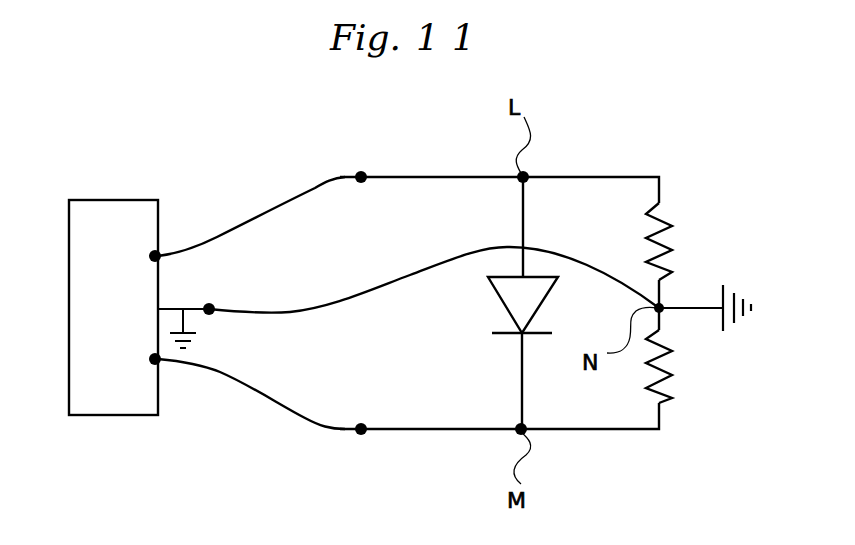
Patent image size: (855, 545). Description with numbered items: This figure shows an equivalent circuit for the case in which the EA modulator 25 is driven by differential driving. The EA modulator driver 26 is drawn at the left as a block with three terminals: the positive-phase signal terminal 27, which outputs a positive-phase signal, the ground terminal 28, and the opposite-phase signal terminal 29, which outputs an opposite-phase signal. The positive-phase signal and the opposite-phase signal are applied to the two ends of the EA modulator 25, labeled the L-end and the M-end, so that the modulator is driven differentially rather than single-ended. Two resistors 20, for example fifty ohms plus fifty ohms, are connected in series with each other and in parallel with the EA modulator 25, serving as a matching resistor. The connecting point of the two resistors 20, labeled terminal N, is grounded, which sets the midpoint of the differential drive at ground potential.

The matching resistor 20 is at (672, 240).
The EA modulator 25 is at (518, 303).
The EA modulator driver 26 is at (97, 201).
The positive-phase signal terminal 27 is at (158, 253).
The ground terminal 28 is at (168, 308).
The opposite-phase signal terminal 29 is at (168, 370).